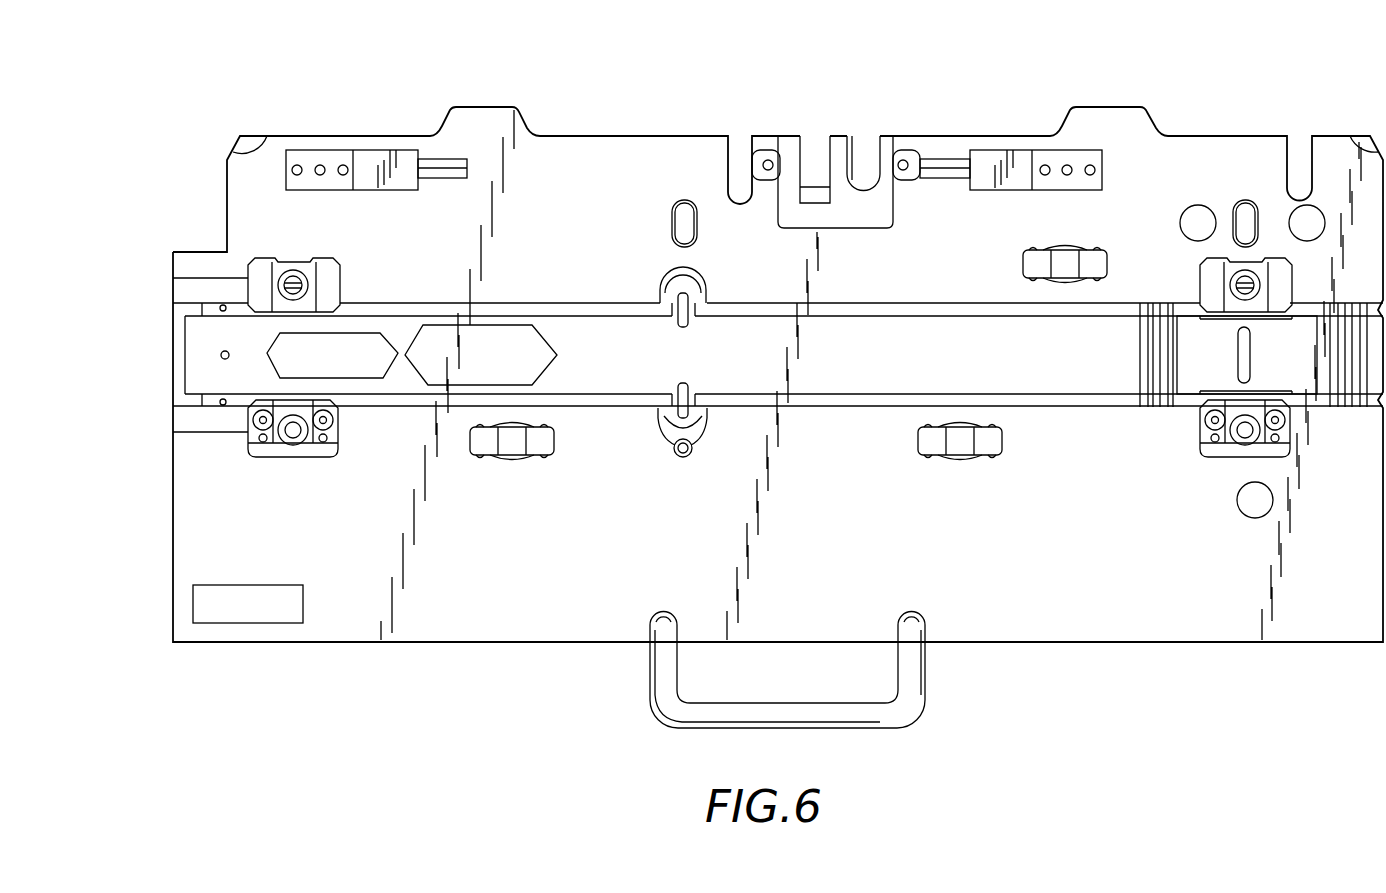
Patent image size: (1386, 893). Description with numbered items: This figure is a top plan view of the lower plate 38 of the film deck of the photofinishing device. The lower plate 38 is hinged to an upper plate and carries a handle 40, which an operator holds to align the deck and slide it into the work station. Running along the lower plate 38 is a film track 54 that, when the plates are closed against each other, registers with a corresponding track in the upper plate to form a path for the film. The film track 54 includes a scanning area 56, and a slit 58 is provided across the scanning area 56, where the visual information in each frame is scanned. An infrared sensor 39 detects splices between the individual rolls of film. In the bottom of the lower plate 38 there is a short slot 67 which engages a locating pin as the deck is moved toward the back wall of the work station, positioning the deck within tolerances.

The lower plate 38 is at (806, 87).
The short slot 67 is at (862, 136).
The film track 54 is at (826, 334).
The infrared sensor 39 is at (221, 352).
The scanning area 56 is at (1264, 353).
The slit 58 is at (1236, 352).
The handle 40 is at (926, 688).